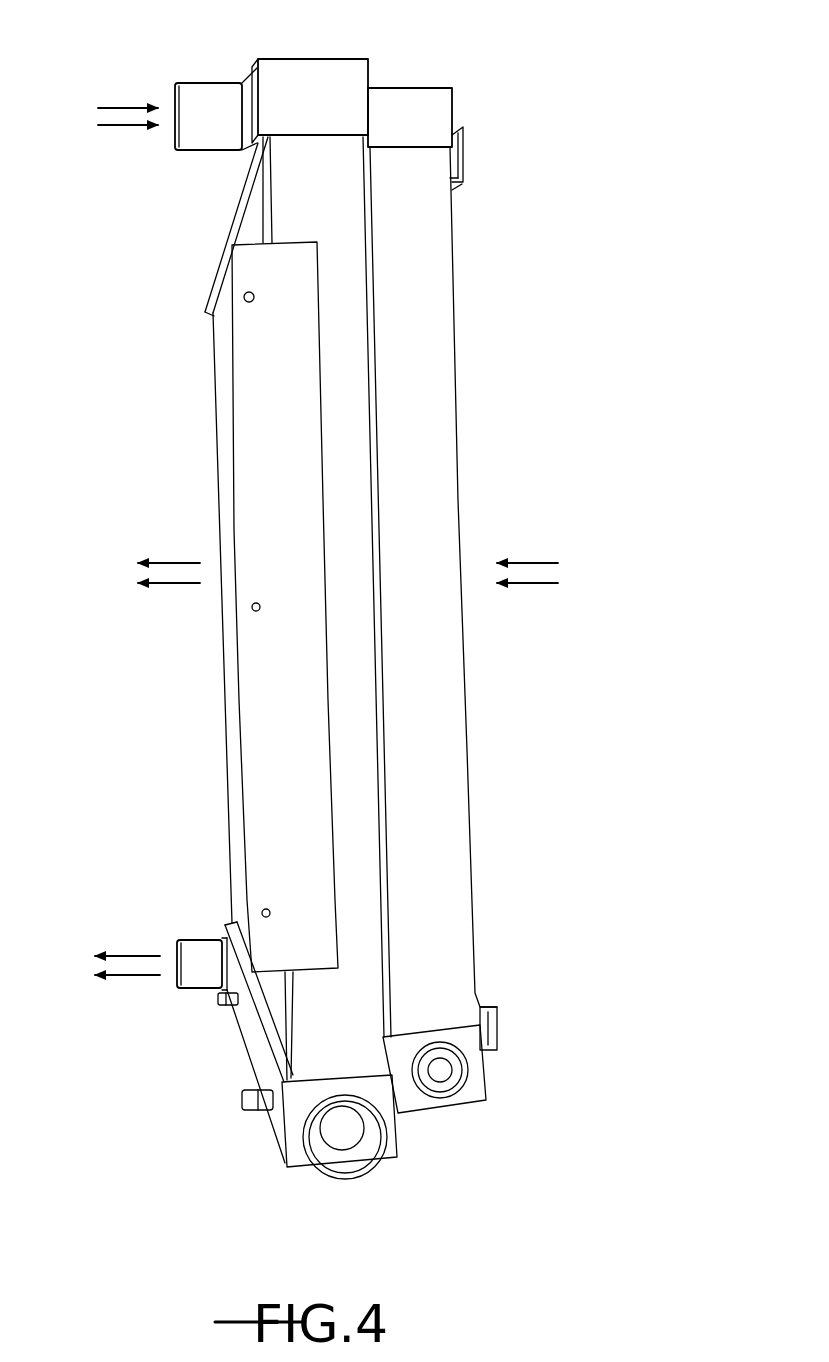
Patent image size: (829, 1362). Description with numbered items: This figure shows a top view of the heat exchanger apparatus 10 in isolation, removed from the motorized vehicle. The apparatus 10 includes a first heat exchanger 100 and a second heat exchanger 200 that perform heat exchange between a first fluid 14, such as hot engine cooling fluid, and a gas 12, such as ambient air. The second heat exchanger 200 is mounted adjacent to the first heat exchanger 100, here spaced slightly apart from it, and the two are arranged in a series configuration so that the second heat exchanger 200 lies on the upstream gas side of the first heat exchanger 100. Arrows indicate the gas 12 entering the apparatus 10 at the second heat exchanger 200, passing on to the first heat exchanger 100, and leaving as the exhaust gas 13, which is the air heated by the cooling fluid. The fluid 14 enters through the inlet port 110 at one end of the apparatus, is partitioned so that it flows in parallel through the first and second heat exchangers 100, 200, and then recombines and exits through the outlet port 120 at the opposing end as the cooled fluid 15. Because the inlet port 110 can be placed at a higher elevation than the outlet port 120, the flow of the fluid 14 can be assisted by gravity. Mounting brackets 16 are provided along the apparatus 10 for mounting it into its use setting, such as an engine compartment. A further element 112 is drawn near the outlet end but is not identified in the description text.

The heat exchanger apparatus 10 is at (510, 70).
The first heat exchanger 100 is at (312, 88).
The second heat exchanger 200 is at (400, 107).
The inlet port 110 is at (187, 117).
The outlet port 120 is at (188, 965).
The port housing 112 is at (372, 1100).
The mounting brackets 16 is at (462, 184).
The gas 12 is at (549, 571).
The exhaust gas 13 is at (150, 576).
The first fluid 14 is at (114, 111).
The cooled fluid 15 is at (109, 966).